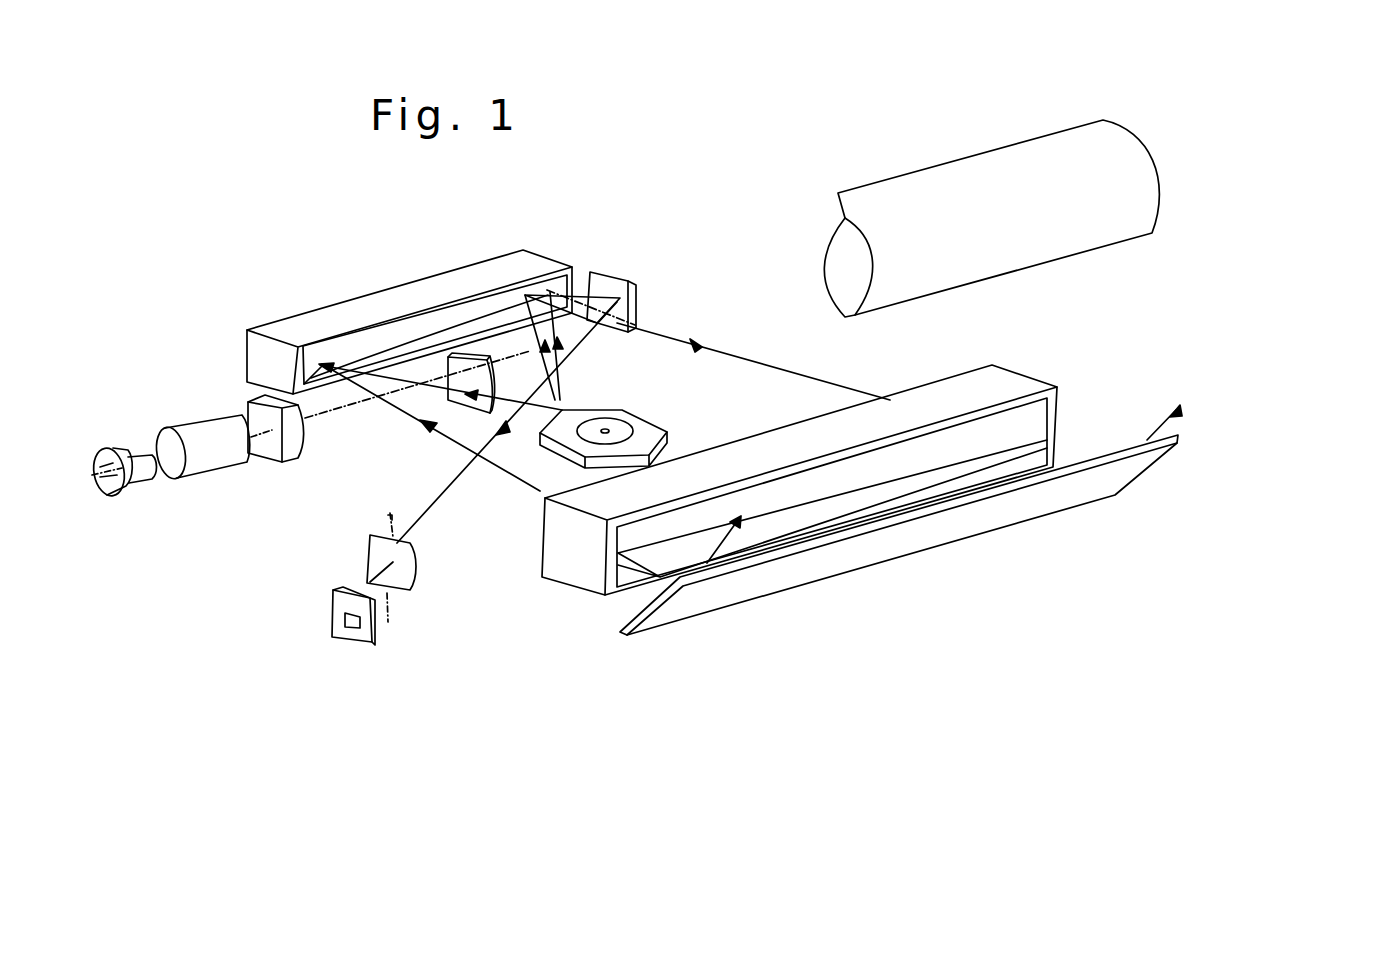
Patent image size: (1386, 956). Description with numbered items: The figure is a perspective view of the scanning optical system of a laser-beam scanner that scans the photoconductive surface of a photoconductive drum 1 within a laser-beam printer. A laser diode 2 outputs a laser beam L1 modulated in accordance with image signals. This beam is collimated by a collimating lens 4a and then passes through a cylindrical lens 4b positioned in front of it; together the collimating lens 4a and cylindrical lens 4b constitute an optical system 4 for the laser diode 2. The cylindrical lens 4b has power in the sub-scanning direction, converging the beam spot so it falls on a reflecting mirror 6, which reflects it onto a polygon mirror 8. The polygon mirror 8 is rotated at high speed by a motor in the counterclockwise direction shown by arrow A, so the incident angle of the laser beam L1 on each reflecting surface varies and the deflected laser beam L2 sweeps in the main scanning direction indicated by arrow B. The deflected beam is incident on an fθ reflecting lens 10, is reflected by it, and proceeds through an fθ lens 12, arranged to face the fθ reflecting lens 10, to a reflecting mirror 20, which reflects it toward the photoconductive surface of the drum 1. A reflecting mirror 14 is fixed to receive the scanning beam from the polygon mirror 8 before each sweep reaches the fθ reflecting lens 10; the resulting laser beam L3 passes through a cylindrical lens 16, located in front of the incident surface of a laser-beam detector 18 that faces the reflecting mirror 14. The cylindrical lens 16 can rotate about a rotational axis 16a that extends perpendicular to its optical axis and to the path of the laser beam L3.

The photoconductive drum 1 is at (972, 172).
The laser diode 2 is at (108, 500).
The optical system 4 is at (232, 482).
The collimating lens 4a is at (228, 468).
The cylindrical lens 4b is at (280, 461).
The reflecting mirror 6 is at (488, 363).
The polygon mirror 8 is at (650, 423).
The fθ reflecting lens 10 is at (490, 258).
The fθ lens 12 is at (920, 392).
The reflecting mirror 14 is at (635, 293).
The cylindrical lens 16 is at (410, 593).
The rotational axis 16a is at (400, 517).
The laser-beam detector 18 is at (358, 647).
The reflecting mirror 20 is at (883, 548).
The laser beam L1 is at (328, 413).
The deflected laser beam L2 is at (757, 361).
The laser beam L3 is at (448, 505).
The arrow A is at (528, 453).
The arrow B is at (1078, 539).